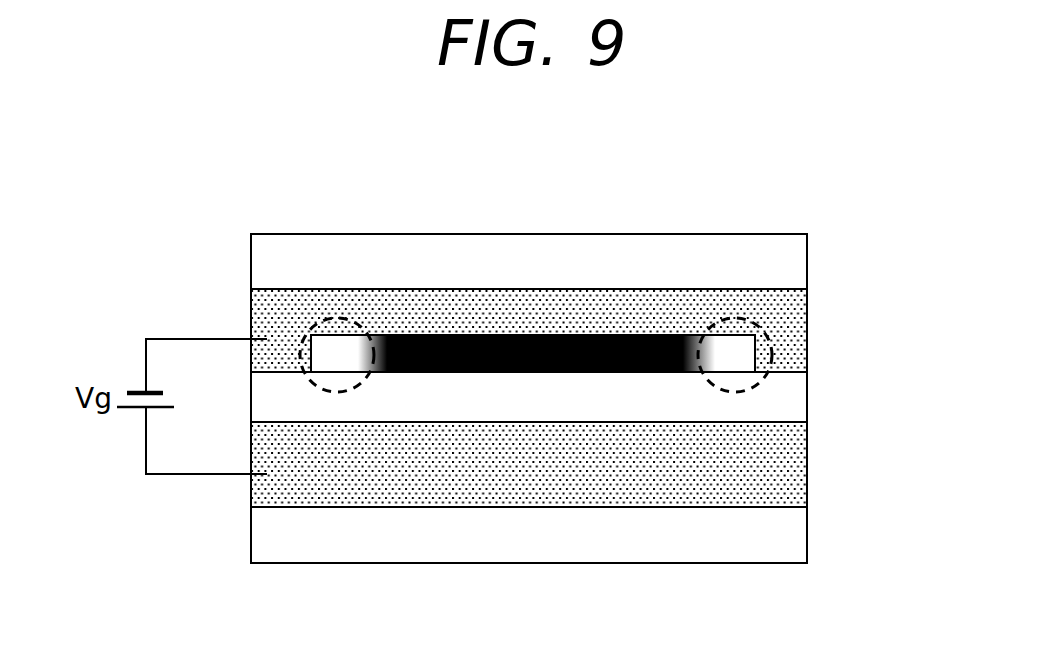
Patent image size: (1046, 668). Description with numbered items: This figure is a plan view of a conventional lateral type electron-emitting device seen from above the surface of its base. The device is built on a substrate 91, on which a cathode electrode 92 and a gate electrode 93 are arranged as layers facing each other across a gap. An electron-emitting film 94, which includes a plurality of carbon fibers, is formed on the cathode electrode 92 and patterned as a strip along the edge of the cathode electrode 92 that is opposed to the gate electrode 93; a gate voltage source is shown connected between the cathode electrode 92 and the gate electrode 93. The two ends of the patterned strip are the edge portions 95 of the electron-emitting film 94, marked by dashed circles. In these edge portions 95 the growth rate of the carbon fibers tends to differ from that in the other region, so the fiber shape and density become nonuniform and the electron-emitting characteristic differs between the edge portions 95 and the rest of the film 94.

The substrate 91 is at (793, 255).
The cathode electrode 92 is at (792, 335).
The gate electrode 93 is at (792, 468).
The electron-emitting film 94 is at (537, 335).
The edge portions 95 is at (317, 322).